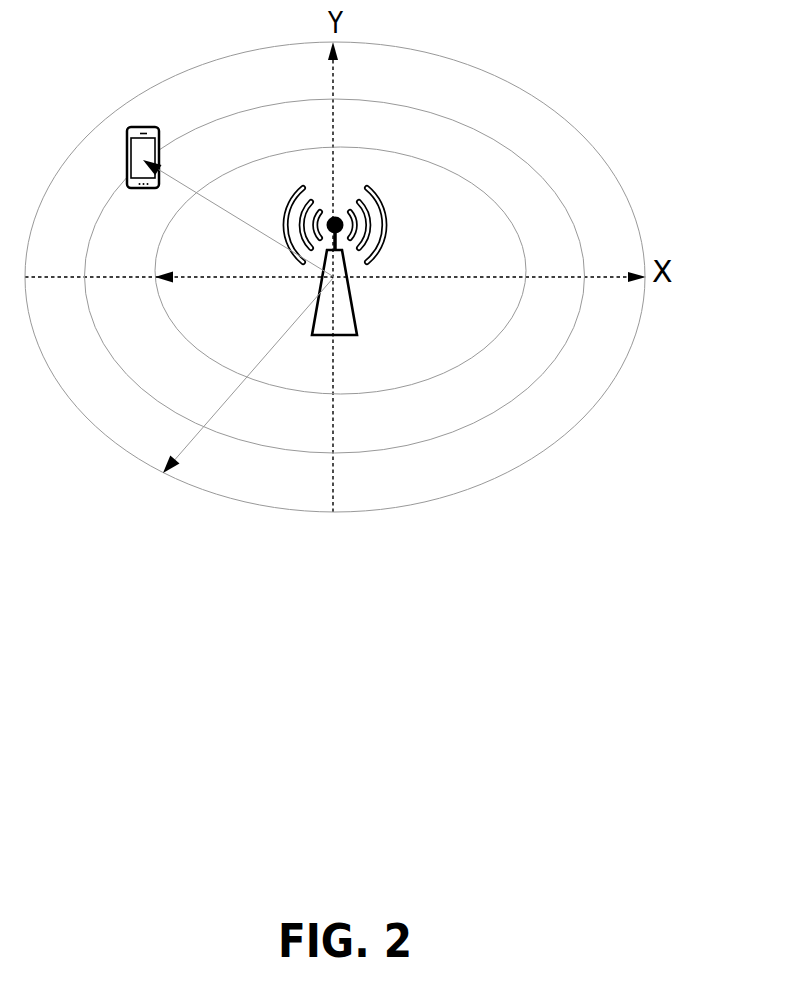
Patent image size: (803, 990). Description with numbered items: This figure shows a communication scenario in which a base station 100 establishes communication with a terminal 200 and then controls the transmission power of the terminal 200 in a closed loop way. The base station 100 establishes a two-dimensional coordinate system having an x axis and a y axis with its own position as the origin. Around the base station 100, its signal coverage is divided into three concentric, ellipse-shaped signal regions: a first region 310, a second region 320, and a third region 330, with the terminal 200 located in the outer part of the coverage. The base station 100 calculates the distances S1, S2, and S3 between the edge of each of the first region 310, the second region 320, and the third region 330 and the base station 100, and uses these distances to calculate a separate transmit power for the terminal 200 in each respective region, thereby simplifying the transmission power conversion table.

The base station 100 is at (353, 298).
The terminal 200 is at (160, 130).
The first region 310 is at (382, 147).
The second region 320 is at (398, 102).
The third region 330 is at (408, 43).
The distance between edge of first region and base station S1 is at (173, 264).
The distance between edge of second region and base station S2 is at (238, 211).
The distance between edge of third region and base station S3 is at (248, 380).